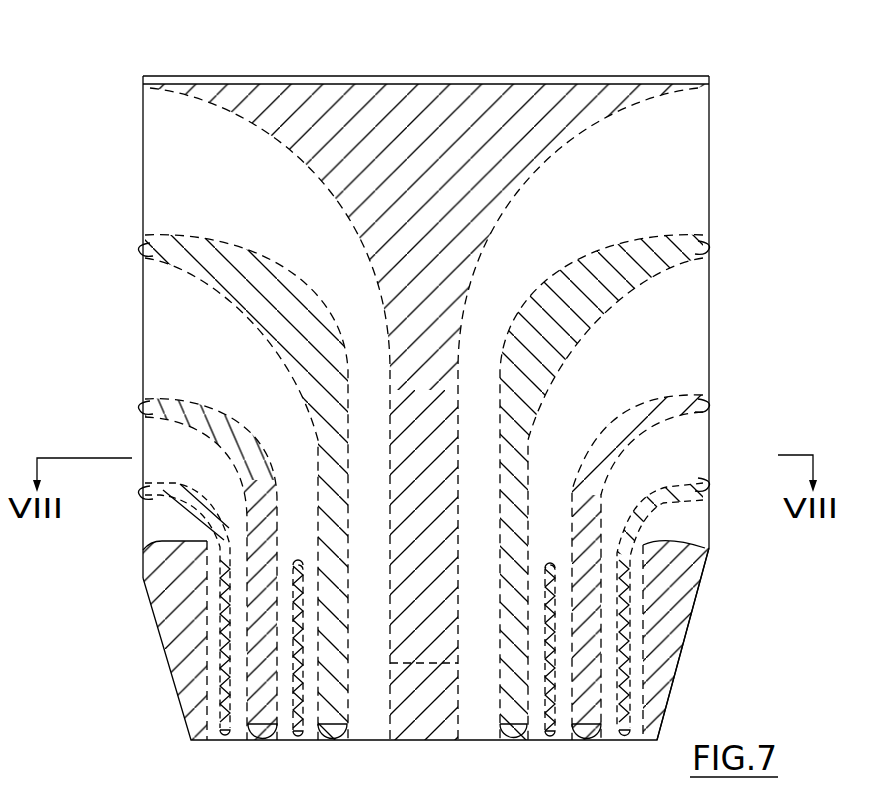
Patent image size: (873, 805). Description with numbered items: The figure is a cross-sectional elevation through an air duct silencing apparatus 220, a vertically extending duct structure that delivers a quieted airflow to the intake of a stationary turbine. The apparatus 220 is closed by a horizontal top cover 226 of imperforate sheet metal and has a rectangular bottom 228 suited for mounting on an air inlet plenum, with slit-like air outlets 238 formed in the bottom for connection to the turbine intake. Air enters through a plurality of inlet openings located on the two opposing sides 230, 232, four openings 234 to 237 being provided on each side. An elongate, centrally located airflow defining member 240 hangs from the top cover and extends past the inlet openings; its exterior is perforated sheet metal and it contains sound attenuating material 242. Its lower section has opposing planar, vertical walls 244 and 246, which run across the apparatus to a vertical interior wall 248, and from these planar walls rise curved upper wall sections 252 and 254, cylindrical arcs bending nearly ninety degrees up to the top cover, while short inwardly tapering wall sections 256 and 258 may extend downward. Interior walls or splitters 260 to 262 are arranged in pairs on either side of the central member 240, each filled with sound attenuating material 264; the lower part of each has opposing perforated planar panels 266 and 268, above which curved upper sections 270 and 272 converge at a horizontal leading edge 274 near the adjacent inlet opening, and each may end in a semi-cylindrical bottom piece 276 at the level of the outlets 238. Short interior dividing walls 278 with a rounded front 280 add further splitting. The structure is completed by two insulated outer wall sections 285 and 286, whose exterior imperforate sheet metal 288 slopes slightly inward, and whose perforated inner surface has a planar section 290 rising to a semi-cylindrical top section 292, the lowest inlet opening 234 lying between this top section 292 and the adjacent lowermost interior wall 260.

The air duct silencing apparatus 220 is at (507, 53).
The top cover 226 is at (600, 78).
The bottom 228 is at (588, 742).
The side 230 is at (142, 298).
The side 232 is at (710, 278).
The inlet opening 234 is at (692, 516).
The inlet opening 235 is at (683, 443).
The inlet opening 236 is at (200, 346).
The inlet opening 237 is at (195, 174).
The air outlet 238 is at (534, 733).
The central airflow defining member 240 is at (478, 276).
The sound attenuating material 242 is at (297, 95).
The planar vertical wall 244 is at (463, 373).
The planar vertical wall 246 is at (390, 383).
The interior wall 248 is at (687, 127).
The curved upper wall section 252 is at (593, 138).
The curved upper wall section 254 is at (293, 158).
The inwardly tapering wall section 256 is at (397, 697).
The inwardly tapering wall section 258 is at (445, 710).
The interior wall 260 is at (160, 483).
The interior wall 261 is at (162, 398).
The interior wall 262 is at (163, 242).
The sound attenuating material 264 is at (603, 262).
The planar sheet metal panel 266 is at (527, 467).
The planar sheet metal panel 268 is at (527, 550).
The curved upper section 270 is at (587, 330).
The curved upper section 272 is at (657, 233).
The leading edge 274 is at (713, 248).
The semi-cylindrical bottom piece 276 is at (263, 742).
The short interior dividing wall 278 is at (290, 712).
The rounded front 280 is at (553, 570).
The insulated outer wall section 285 is at (190, 628).
The insulated outer wall section 286 is at (668, 660).
The imperforate sheet metal 288 is at (693, 628).
The planar section 290 is at (647, 697).
The semi-cylindrical top section 292 is at (700, 543).